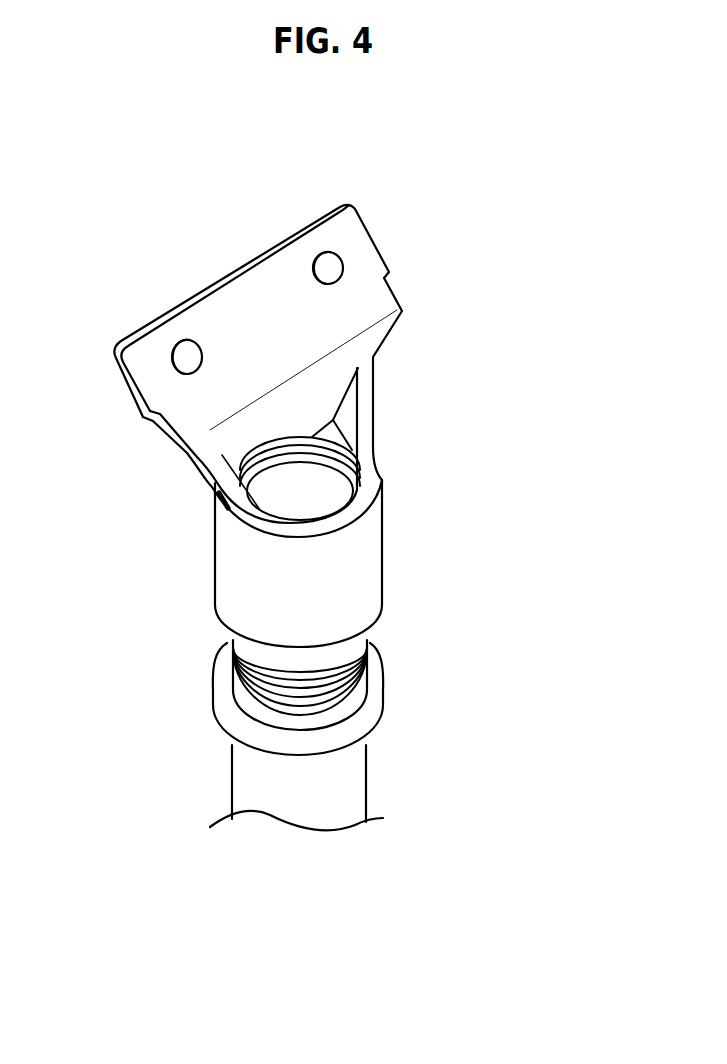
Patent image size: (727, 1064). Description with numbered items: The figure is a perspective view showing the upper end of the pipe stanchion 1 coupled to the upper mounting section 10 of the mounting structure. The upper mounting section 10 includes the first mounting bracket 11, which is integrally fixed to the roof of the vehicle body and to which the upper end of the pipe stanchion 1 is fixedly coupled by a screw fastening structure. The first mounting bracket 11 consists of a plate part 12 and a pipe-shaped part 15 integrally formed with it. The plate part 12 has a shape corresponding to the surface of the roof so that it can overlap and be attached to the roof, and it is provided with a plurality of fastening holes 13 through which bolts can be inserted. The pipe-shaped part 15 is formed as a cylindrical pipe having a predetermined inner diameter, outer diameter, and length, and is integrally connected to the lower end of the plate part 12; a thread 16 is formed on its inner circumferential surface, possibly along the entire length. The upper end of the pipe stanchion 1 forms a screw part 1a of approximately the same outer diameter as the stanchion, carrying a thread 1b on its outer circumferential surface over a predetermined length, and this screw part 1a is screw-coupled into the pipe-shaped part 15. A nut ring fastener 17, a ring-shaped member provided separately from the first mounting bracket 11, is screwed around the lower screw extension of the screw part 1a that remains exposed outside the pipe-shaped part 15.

The pipe stanchion 1 is at (355, 785).
The screw part 1a is at (243, 690).
The thread 1b is at (370, 647).
The upper mounting section 10 is at (309, 402).
The first mounting bracket 11 is at (380, 377).
The plate part 12 is at (250, 323).
The fastening holes 13 is at (193, 343).
The pipe-shaped part 15 is at (368, 575).
The thread 16 is at (288, 440).
The nut ring fastener 17 is at (378, 700).